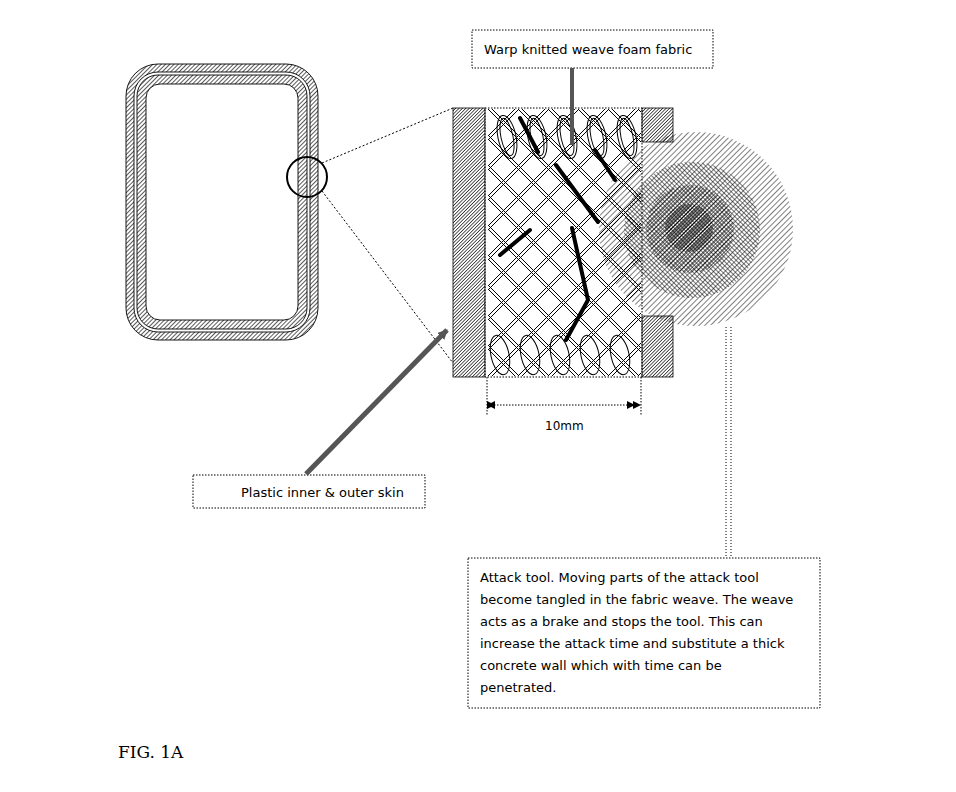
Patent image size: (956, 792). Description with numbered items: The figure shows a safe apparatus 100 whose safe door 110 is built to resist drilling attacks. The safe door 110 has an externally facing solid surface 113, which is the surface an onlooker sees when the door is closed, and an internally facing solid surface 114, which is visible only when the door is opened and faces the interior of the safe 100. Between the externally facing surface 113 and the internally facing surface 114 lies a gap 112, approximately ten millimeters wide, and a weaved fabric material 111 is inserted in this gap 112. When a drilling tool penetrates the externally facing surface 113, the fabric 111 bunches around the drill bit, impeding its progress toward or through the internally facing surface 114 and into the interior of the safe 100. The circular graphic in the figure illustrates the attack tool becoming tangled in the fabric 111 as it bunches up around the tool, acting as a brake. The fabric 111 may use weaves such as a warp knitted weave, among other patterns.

The safe apparatus 100 is at (203, 64).
The safe door 110 is at (160, 117).
The weaved fabric material 111 is at (615, 362).
The gap 112 is at (517, 108).
The externally facing solid surface 113 is at (458, 203).
The internally facing solid surface 114 is at (663, 123).